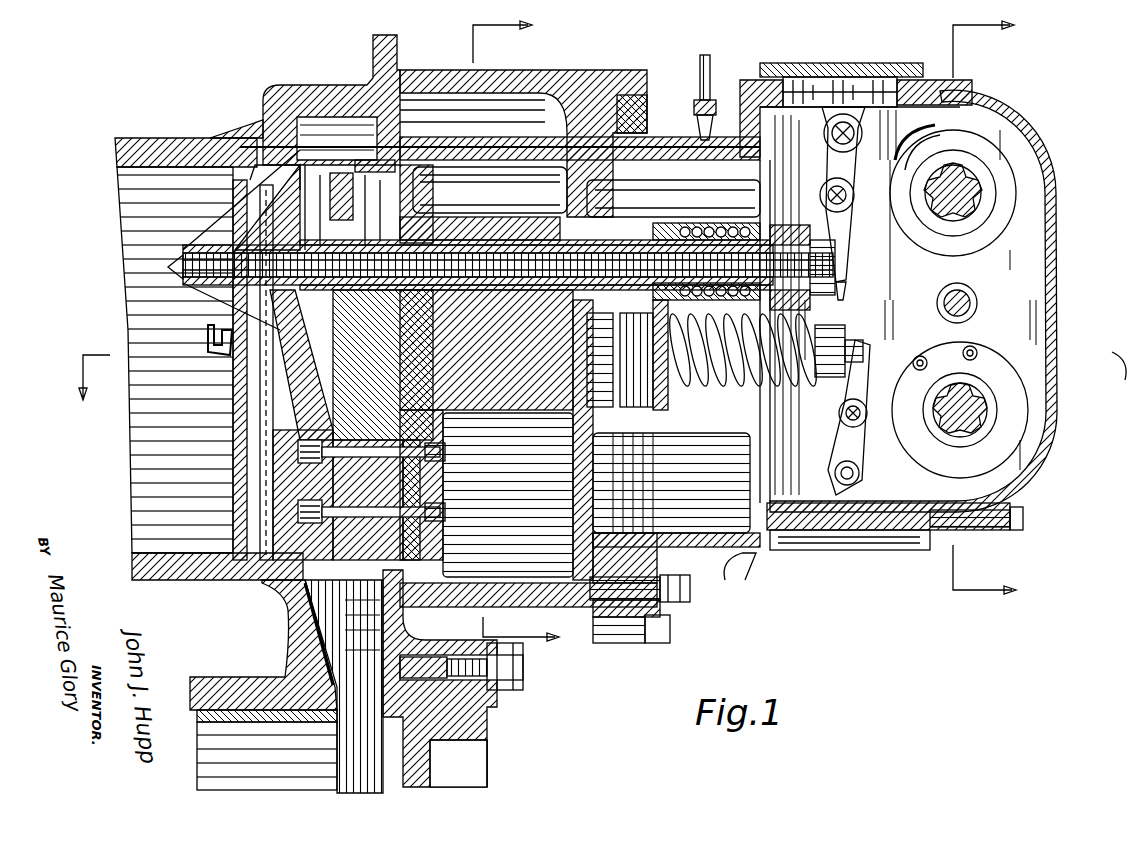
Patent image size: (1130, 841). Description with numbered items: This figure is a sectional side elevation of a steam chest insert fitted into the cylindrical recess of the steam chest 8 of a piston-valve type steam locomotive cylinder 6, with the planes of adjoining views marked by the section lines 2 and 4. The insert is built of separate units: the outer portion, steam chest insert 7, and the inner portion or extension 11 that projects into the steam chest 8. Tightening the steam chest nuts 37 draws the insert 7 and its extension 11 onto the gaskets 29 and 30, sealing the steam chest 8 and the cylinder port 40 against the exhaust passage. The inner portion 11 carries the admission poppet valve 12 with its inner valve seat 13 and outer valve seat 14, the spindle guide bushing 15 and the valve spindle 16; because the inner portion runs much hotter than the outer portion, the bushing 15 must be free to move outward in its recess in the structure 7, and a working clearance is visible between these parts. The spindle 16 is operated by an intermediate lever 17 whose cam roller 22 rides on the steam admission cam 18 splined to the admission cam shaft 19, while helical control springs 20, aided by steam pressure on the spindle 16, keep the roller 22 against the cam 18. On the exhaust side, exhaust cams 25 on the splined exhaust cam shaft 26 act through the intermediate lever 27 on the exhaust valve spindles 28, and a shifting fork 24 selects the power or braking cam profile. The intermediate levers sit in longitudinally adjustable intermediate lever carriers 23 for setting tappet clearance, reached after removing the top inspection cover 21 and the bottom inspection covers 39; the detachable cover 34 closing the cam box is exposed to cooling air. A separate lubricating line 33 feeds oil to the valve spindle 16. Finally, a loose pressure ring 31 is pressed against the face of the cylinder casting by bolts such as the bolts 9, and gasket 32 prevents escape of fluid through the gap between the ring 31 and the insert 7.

The section line 2- 2 is at (604, 384).
The section line 4- 4 is at (527, 329).
The steam locomotive cylinder 6 is at (230, 690).
The steam chest insert 7 is at (894, 306).
The steam chest 8 is at (209, 359).
The bolts 9 is at (305, 490).
The inner portion 11 is at (312, 395).
The admission poppet valve 12 is at (210, 345).
The inner valve seat 13 is at (245, 355).
The outer valve seat 14 is at (360, 340).
The spindle guide bushing 15 is at (490, 190).
The valve spindle 16 is at (482, 267).
The intermediate lever 17 is at (842, 270).
The steam admission cam 18 is at (905, 245).
The splined shaft 19 is at (1000, 195).
The control springs 20 is at (692, 286).
The top inspection cover 21 is at (830, 70).
The cam roller 22 is at (822, 187).
The intermediate lever carriers 23 is at (825, 127).
The shifting fork 24 is at (648, 225).
The exhaust cams 25 is at (1015, 377).
The exhaust cam shaft 26 is at (1000, 432).
The intermediate lever 27 is at (825, 450).
The exhaust valve spindles 28 is at (724, 390).
The gasket 29 is at (265, 140).
The gasket 30 is at (445, 658).
The loose pressure ring 31 is at (662, 640).
The gasket 32 is at (645, 97).
The lubricating line 33 is at (700, 60).
The detachable cover 34 is at (1058, 300).
The steam chest nuts 37 is at (688, 592).
The bottom inspection covers 39 is at (830, 540).
The cylinder port 40 is at (342, 580).